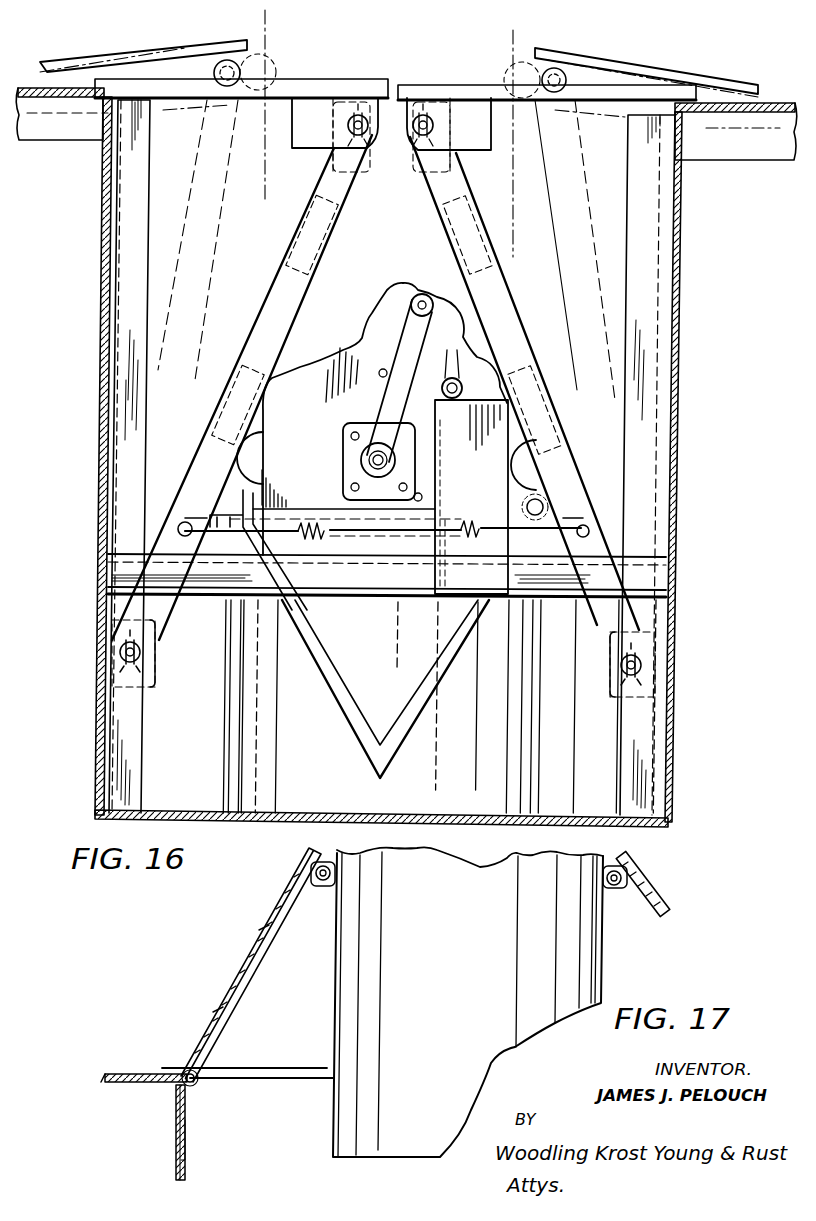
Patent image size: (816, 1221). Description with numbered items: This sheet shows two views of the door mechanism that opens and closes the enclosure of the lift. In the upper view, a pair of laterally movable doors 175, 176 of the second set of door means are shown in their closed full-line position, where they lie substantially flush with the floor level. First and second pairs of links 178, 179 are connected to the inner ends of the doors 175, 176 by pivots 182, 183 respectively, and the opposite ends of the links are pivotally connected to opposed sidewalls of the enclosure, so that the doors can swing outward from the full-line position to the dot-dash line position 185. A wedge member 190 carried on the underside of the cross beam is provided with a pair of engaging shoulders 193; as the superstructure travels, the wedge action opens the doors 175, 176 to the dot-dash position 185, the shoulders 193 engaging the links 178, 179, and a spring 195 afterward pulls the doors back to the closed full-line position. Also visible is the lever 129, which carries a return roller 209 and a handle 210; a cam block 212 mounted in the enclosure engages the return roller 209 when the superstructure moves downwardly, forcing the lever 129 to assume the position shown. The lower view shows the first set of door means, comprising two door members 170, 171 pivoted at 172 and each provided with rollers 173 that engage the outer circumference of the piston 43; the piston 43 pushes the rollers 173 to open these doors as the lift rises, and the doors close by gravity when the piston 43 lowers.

In FIG. 16, the dot-dash line position 185 is at (128, 50).
In FIG. 16, the door 175 is at (282, 83).
In FIG. 16, the door 176 is at (477, 84).
In FIG. 16, the pivot 182 is at (348, 120).
In FIG. 16, the pivot 183 is at (440, 125).
In FIG. 16, the first pair of links 178 is at (268, 293).
In FIG. 16, the second pair of links 179 is at (507, 290).
In FIG. 16, the handle 210 is at (420, 289).
In FIG. 16, the return roller 209 is at (452, 377).
In FIG. 16, the lever 129 is at (420, 390).
In FIG. 16, the cam block 212 is at (541, 380).
In FIG. 16, the engaging shoulders 193 is at (248, 449).
In FIG. 16, the spring 195 is at (333, 587).
In FIG. 16, the wedge member 190 is at (328, 677).
In FIG. 17, the door member 170 is at (220, 1001).
In FIG. 17, the piston 43 is at (341, 1004).
In FIG. 17, the pivot 172 is at (196, 1082).
In FIG. 17, the rollers 173 is at (322, 887).
In FIG. 17, the door member 171 is at (665, 909).